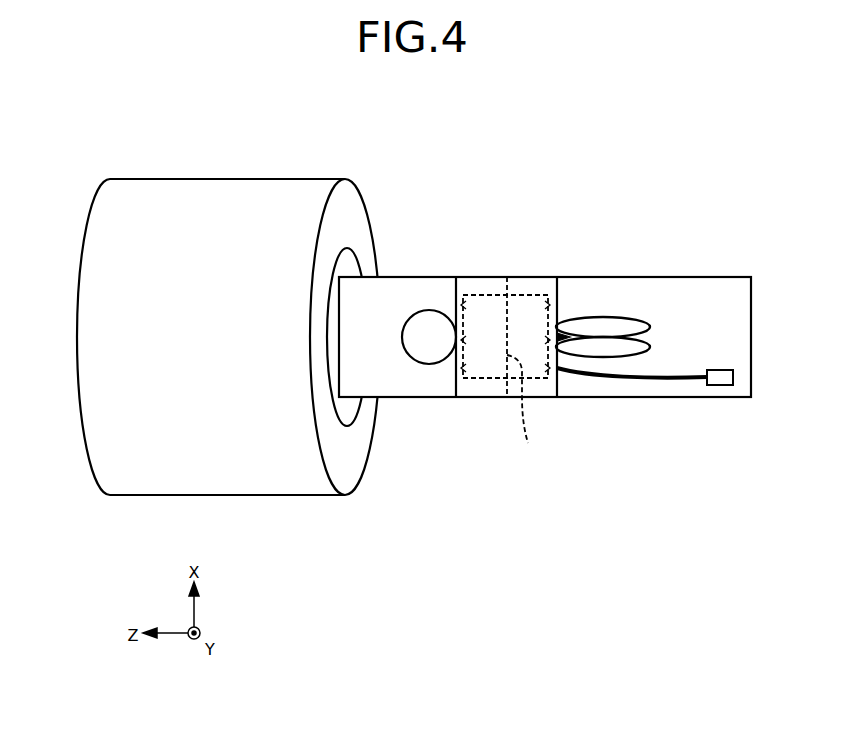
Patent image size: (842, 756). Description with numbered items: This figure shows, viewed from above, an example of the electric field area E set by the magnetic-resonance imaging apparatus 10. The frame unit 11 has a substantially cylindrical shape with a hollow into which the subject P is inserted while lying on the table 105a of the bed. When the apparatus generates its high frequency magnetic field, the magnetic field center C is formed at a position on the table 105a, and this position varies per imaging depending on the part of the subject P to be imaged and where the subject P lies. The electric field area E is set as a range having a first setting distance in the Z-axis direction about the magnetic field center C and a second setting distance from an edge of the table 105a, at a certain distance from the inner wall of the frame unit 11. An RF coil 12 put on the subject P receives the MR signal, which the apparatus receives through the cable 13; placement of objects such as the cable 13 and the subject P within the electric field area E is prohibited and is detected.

The magnetic-resonance imaging apparatus 10 is at (356, 148).
The frame unit 11 is at (172, 178).
The table 105a is at (662, 292).
The subject P is at (428, 306).
The electric field area E is at (483, 285).
The RF coil 12 is at (525, 285).
The magnetic field center C is at (521, 413).
The cable 13 is at (665, 398).